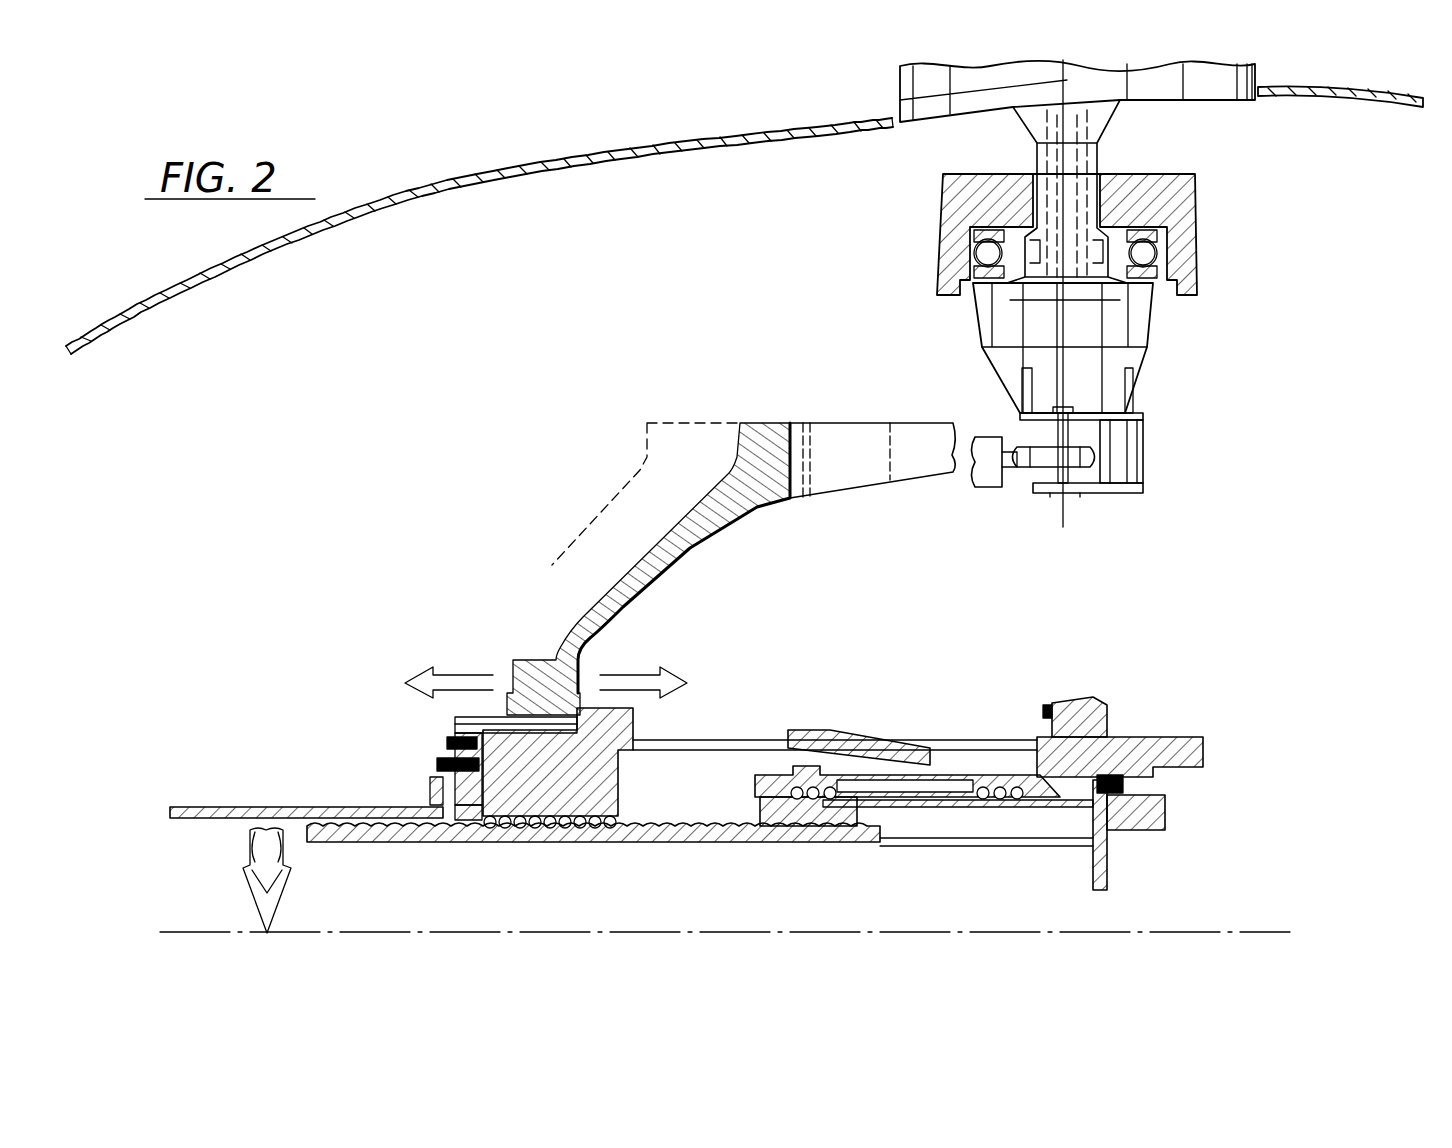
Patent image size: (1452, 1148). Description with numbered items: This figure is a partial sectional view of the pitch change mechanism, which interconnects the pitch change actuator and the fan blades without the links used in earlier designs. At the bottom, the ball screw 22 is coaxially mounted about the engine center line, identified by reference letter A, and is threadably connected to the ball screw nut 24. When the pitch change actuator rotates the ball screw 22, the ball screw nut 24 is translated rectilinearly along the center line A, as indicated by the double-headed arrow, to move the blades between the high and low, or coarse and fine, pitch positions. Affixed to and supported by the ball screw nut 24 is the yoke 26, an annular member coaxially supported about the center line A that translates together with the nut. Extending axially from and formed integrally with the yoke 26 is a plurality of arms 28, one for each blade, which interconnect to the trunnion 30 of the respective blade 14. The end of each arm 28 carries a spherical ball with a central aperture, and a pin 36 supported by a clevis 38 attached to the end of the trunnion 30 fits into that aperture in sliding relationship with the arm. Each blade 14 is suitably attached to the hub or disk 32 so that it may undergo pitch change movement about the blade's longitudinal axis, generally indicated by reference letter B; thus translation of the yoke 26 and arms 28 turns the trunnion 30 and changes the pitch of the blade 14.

The blade 14 is at (1163, 87).
The hub or disk 32 is at (1190, 183).
The trunnion 30 is at (1153, 327).
The pin 36 is at (1083, 442).
The clevis 38 is at (1137, 468).
The arm 28 is at (1032, 463).
The yoke 26 is at (693, 550).
The ball screw nut 24 is at (618, 775).
The ball screw 22 is at (713, 832).
The engine center line A is at (1188, 932).
The blade longitudinal axis B is at (900, 99).